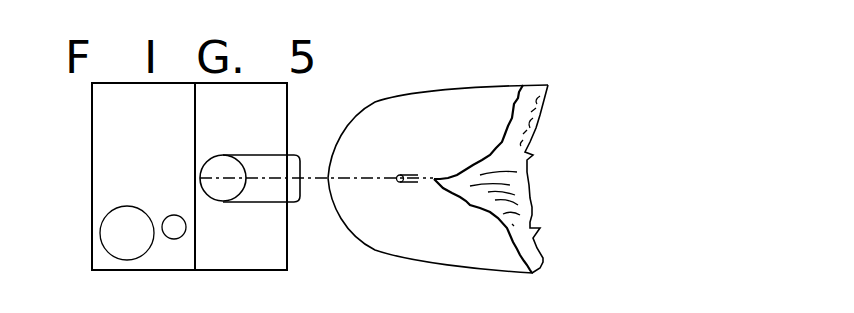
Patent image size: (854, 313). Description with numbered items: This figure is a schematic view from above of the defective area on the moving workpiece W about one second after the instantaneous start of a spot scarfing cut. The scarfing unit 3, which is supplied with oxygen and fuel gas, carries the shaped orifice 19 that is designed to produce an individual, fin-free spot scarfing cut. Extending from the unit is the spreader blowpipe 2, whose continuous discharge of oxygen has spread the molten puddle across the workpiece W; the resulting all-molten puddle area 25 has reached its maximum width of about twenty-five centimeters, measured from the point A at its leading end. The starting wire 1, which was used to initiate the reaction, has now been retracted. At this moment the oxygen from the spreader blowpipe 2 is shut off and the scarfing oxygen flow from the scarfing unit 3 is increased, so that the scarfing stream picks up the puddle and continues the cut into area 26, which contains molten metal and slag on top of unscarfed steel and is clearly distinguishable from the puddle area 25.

The starting wire 1 is at (410, 175).
The spreader blowpipe 2 is at (248, 162).
The scarfing unit 3 is at (102, 165).
The orifice 19 is at (287, 155).
The molten puddle area 25 is at (397, 115).
The scarfing cut area 26 is at (520, 212).
The apex point A is at (328, 178).
The workpiece W is at (598, 125).